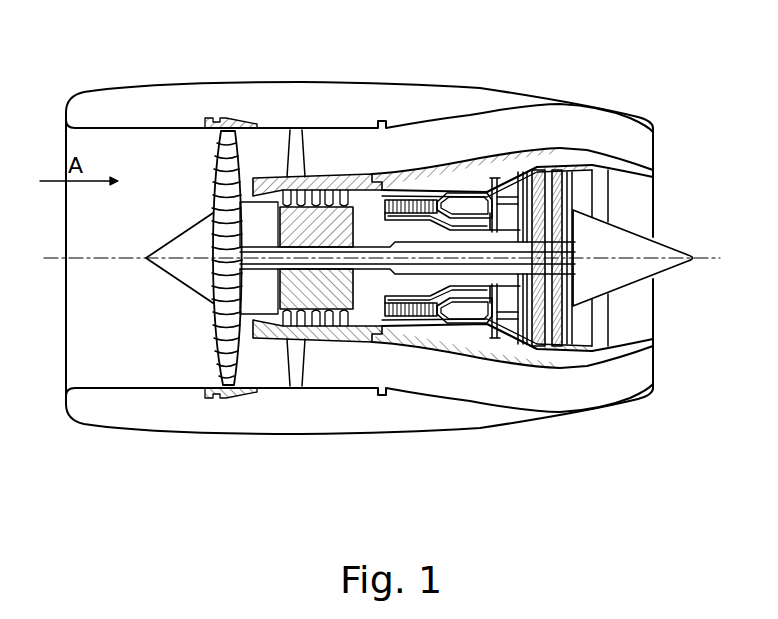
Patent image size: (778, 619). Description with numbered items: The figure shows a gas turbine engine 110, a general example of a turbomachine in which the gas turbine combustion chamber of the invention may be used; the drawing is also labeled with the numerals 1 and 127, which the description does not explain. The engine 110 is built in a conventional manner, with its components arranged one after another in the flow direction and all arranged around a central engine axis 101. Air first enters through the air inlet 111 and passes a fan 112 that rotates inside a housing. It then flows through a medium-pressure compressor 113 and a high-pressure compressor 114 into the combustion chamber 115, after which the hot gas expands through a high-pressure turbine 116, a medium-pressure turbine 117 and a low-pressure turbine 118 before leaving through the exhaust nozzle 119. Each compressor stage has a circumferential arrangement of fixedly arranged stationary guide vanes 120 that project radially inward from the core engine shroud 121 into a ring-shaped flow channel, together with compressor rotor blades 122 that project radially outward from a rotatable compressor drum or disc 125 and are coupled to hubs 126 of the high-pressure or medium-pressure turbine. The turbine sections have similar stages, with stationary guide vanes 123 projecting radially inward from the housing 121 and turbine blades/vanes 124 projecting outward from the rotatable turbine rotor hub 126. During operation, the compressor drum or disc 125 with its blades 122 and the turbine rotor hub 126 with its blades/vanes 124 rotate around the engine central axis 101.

The core engine 1 is at (443, 313).
The central engine axis 101 is at (127, 260).
The gas turbine engine 110 is at (430, 141).
The air inlet 111 is at (189, 168).
The fan 112 is at (228, 132).
The medium-pressure compressor 113 is at (320, 222).
The high-pressure compressor 114 is at (413, 199).
The combustion chamber 115 is at (460, 208).
The high-pressure turbine 116 is at (490, 188).
The medium-pressure turbine 117 is at (523, 190).
The low-pressure turbine 118 is at (587, 165).
The exhaust nozzle 119 is at (600, 204).
The stationary guide vanes 120 is at (290, 345).
The core engine shroud 121 is at (327, 343).
The compressor rotor blades 122 is at (342, 283).
The stationary guide vanes 123 is at (528, 330).
The turbine blades/vanes 124 is at (552, 330).
The compressor drum or disc 125 is at (380, 327).
The turbine rotor hub 126 is at (510, 320).
The exhaust cone 127 is at (662, 252).